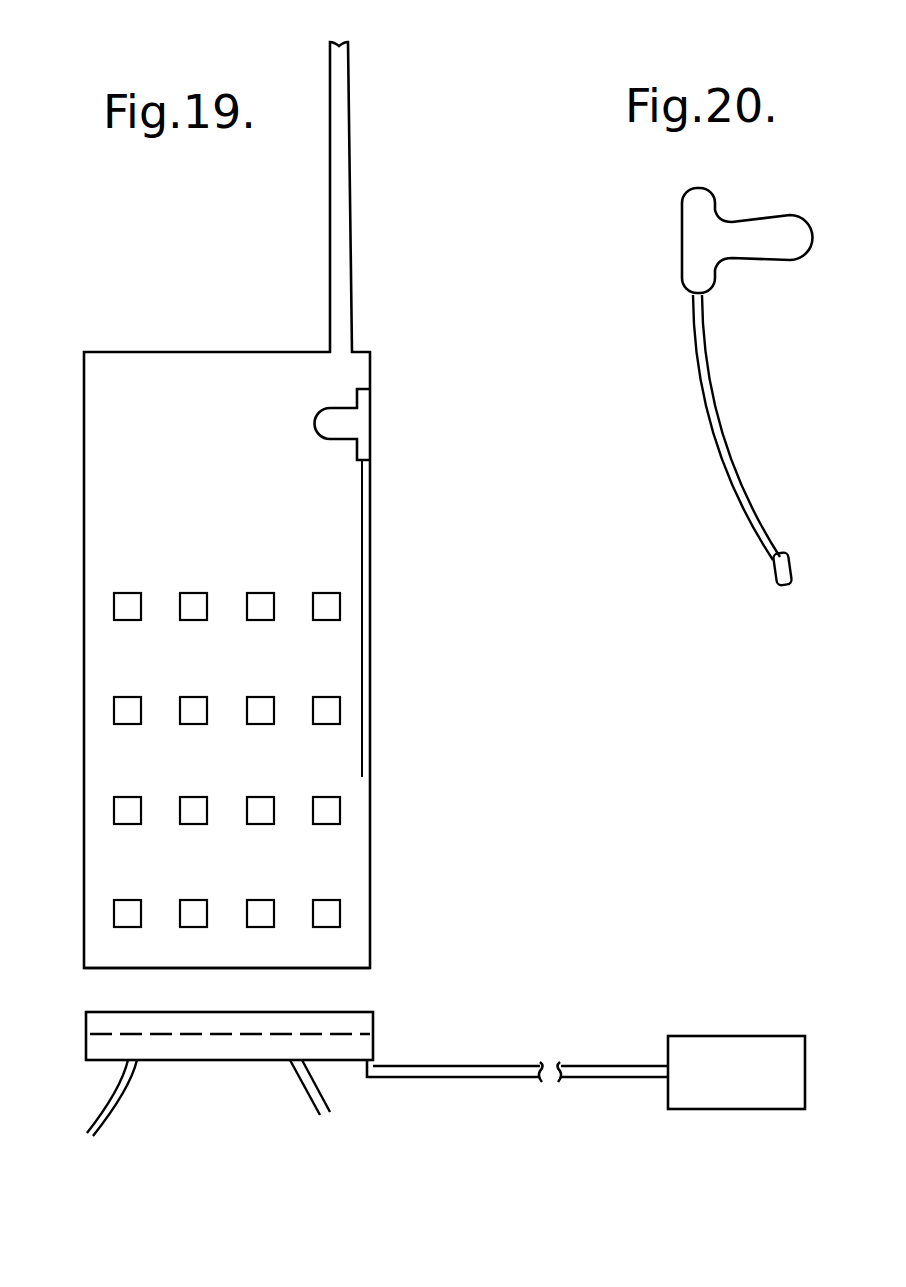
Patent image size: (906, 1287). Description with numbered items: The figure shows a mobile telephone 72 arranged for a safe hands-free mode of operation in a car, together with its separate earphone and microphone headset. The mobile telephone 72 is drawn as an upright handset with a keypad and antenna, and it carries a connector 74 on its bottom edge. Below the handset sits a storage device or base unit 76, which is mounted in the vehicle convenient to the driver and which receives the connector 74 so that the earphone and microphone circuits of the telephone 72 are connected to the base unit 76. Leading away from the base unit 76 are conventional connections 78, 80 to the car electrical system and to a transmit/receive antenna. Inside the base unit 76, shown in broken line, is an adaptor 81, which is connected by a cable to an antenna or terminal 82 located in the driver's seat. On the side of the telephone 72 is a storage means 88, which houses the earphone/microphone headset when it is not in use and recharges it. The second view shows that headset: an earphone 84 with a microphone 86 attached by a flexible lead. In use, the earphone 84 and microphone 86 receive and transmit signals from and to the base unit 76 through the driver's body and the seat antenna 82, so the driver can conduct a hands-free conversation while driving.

In FIG. 19, the mobile telephone 72 is at (181, 342).
In FIG. 19, the connector 74 is at (312, 965).
In FIG. 19, the base unit 76 is at (330, 1012).
In FIG. 19, the connection 78 is at (107, 1102).
In FIG. 19, the connection 80 is at (323, 1103).
In FIG. 19, the adaptor 81 is at (350, 1027).
In FIG. 19, the seat antenna 82 is at (738, 1036).
In FIG. 20, the earphone 84 is at (668, 250).
In FIG. 20, the microphone 86 is at (762, 578).
In FIG. 19, the storage means 88 is at (380, 420).